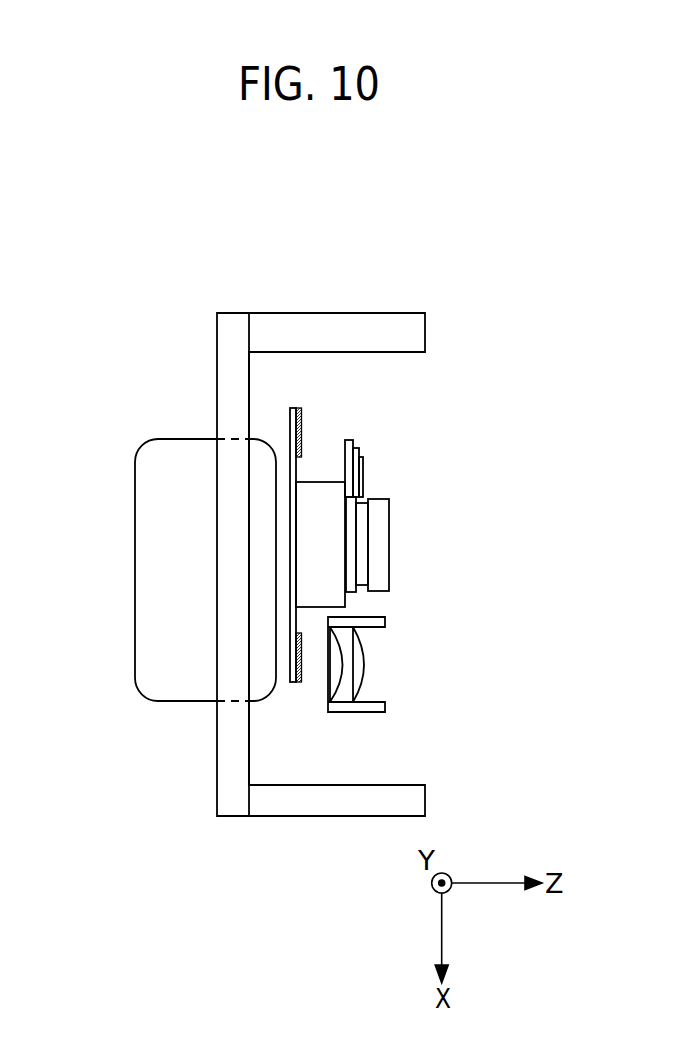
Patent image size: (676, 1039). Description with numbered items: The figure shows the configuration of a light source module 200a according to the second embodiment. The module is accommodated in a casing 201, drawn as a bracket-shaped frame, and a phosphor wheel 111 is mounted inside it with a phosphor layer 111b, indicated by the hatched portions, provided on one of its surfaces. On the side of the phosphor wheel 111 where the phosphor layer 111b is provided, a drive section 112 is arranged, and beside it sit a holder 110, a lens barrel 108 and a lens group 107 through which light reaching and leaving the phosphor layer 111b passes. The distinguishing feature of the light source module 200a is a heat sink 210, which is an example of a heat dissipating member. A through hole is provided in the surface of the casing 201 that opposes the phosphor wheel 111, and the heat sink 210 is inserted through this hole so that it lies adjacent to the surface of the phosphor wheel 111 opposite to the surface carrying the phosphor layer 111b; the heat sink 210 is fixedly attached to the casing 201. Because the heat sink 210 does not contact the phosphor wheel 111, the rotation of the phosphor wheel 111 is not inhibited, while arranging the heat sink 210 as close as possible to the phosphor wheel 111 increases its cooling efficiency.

The light source module 200a is at (205, 248).
The casing 201 is at (235, 763).
The heat sink 210 is at (148, 570).
The phosphor wheel 111 is at (290, 417).
The phosphor layer 111b is at (303, 430).
The drive section 112 is at (322, 500).
The holder 110 is at (378, 545).
The lens barrel 108 is at (368, 622).
The lens group 107 is at (368, 672).